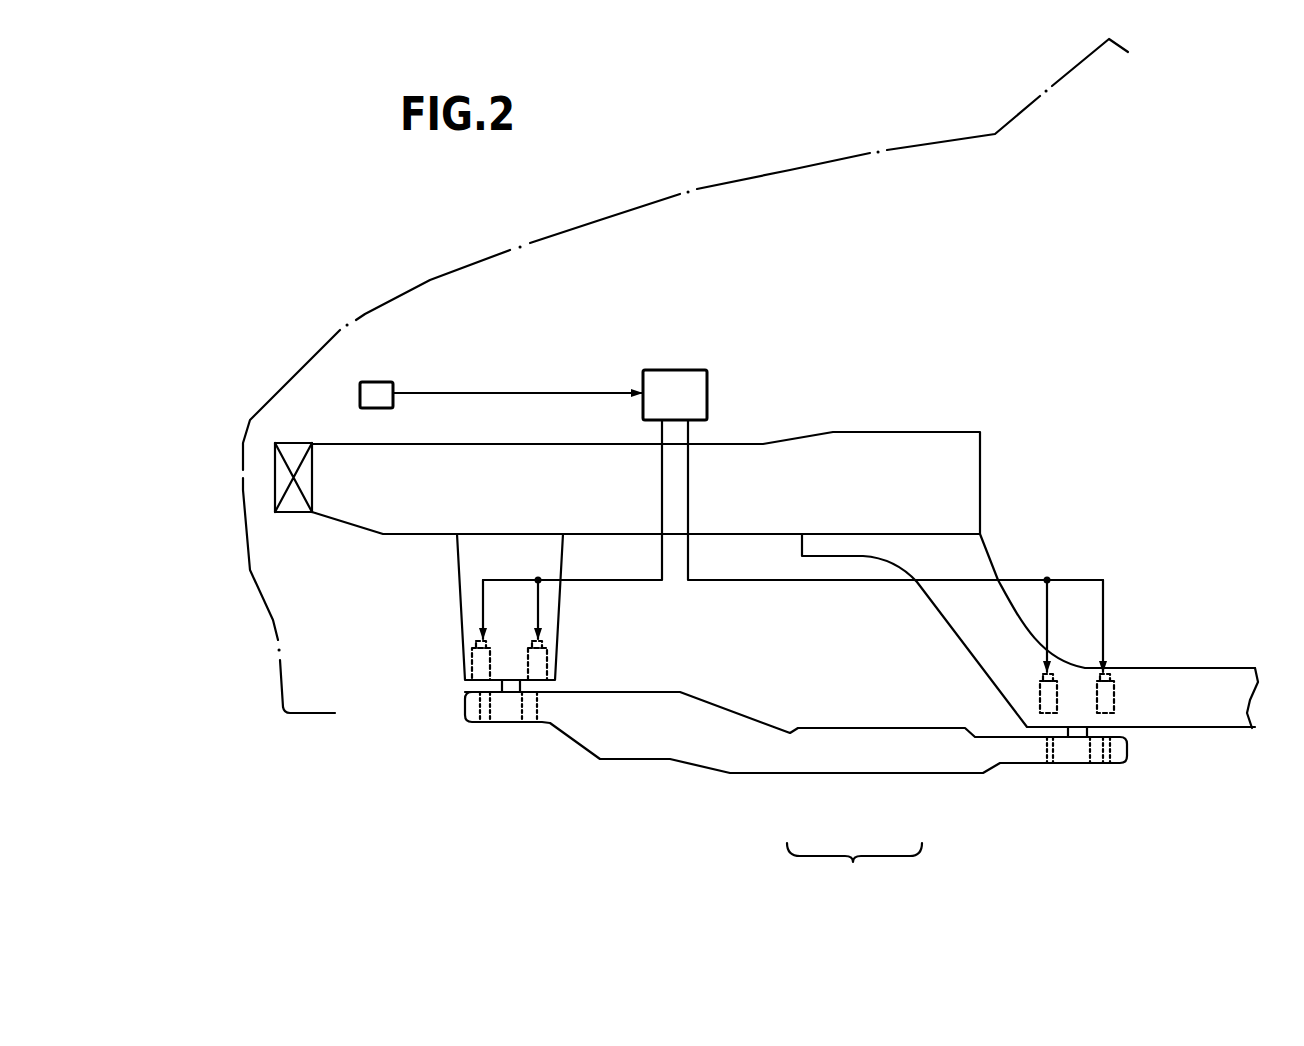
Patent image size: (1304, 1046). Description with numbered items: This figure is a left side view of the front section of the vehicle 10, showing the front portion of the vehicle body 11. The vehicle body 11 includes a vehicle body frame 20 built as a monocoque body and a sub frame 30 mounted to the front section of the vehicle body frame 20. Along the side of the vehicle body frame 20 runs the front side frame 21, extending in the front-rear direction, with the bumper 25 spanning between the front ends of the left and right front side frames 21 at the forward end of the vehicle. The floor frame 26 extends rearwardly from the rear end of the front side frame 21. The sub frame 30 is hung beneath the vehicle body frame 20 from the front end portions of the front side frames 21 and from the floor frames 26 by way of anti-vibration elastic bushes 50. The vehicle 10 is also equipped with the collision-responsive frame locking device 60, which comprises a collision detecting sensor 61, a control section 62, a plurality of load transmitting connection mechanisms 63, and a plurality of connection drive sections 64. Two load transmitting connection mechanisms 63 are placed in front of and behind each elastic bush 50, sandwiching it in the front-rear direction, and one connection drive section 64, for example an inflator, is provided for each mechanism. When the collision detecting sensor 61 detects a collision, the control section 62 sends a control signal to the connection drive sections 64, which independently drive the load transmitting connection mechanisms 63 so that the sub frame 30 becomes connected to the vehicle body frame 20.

The vehicle 10 is at (791, 168).
The vehicle body 11 is at (854, 869).
The vehicle body frame 20 is at (775, 544).
The front side frame 21 is at (868, 445).
The bumper 25 is at (280, 480).
The floor frame 26 is at (1215, 680).
The sub frame 30 is at (888, 778).
The anti-vibration elastic bush 50 is at (493, 722).
The collision-responsive frame locking device 60 is at (507, 337).
The collision detecting sensor 61 is at (386, 382).
The control section 62 is at (684, 375).
The load transmitting connection mechanism 63 is at (465, 680).
The connection drive section 64 is at (468, 650).